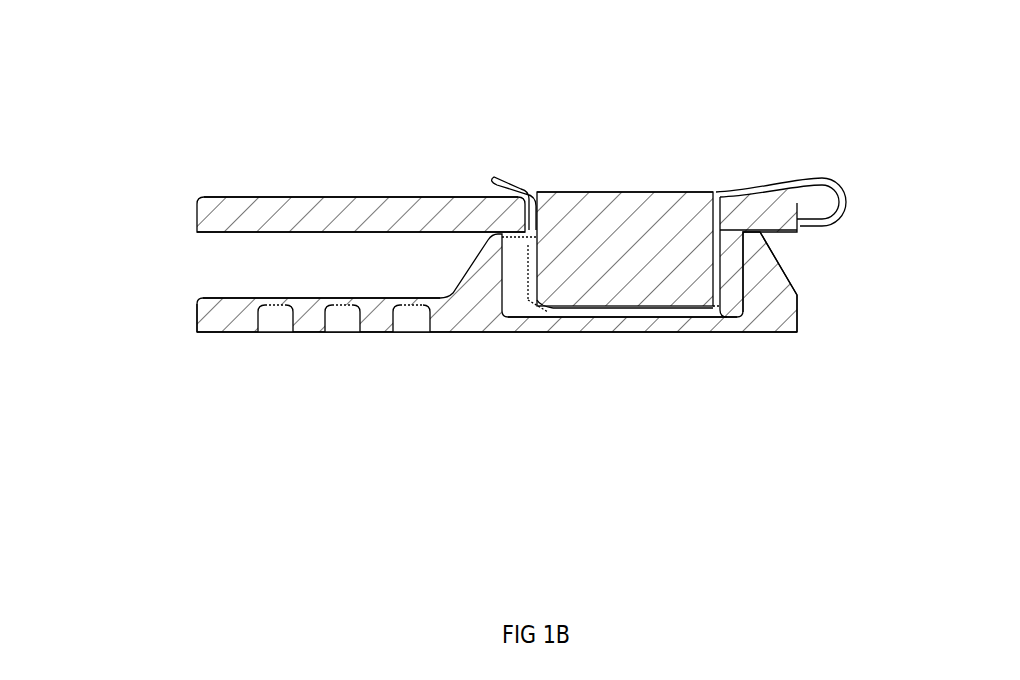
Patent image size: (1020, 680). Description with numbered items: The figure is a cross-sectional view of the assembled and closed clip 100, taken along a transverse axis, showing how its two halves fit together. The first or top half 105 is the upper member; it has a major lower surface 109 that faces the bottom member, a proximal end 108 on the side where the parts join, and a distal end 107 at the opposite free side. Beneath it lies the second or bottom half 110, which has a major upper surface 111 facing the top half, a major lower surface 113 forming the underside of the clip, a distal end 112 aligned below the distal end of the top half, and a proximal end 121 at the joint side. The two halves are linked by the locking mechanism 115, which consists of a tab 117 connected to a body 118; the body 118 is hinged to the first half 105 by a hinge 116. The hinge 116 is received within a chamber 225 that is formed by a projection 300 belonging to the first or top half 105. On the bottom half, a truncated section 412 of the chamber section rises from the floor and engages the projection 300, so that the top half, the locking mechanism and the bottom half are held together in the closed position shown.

The clip 100 is at (442, 107).
The first half 105 is at (348, 195).
The distal end 107 is at (197, 218).
The proximal end 108 is at (800, 218).
The major lower surface 109 is at (250, 233).
The second half 110 is at (243, 325).
The major upper surface 111 is at (232, 298).
The distal end 112 is at (197, 312).
The major lower surface 113 is at (470, 333).
The locking mechanism 115 is at (635, 195).
The hinge 116 is at (843, 185).
The tab 117 is at (494, 178).
The body 118 is at (585, 190).
The proximal end 121 is at (797, 328).
The chamber 225 is at (710, 300).
The projection 300 is at (737, 303).
The truncated section 412 is at (780, 268).